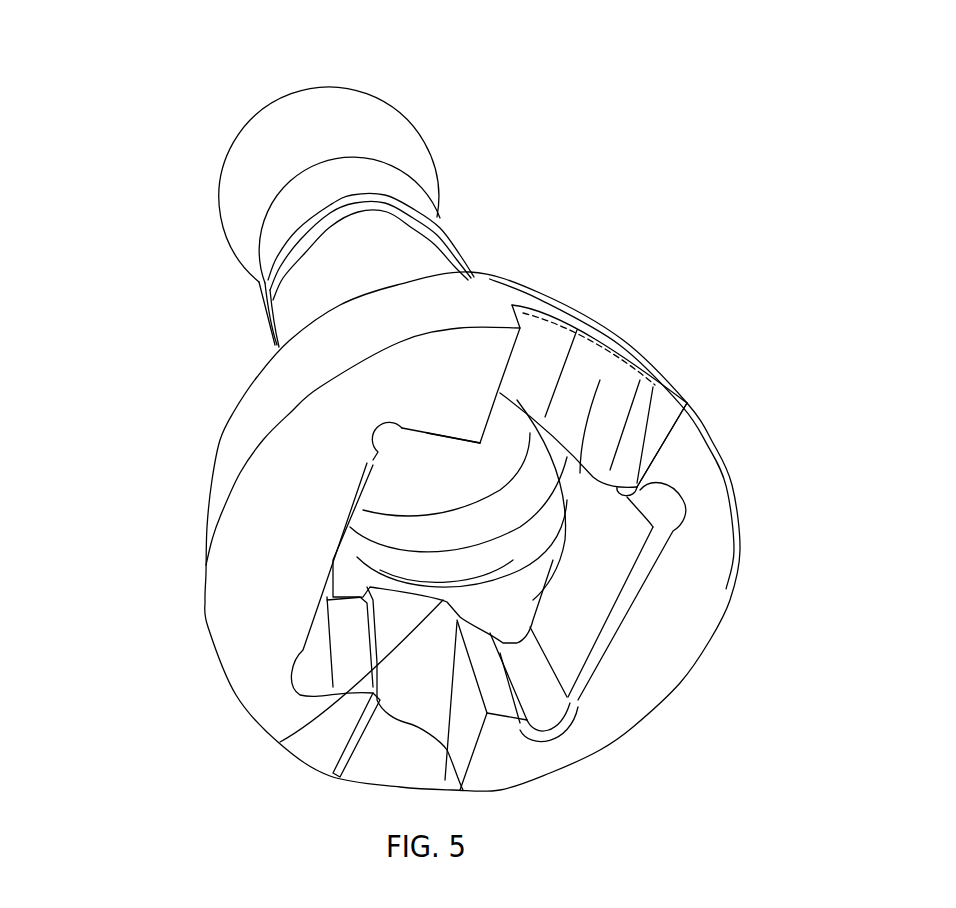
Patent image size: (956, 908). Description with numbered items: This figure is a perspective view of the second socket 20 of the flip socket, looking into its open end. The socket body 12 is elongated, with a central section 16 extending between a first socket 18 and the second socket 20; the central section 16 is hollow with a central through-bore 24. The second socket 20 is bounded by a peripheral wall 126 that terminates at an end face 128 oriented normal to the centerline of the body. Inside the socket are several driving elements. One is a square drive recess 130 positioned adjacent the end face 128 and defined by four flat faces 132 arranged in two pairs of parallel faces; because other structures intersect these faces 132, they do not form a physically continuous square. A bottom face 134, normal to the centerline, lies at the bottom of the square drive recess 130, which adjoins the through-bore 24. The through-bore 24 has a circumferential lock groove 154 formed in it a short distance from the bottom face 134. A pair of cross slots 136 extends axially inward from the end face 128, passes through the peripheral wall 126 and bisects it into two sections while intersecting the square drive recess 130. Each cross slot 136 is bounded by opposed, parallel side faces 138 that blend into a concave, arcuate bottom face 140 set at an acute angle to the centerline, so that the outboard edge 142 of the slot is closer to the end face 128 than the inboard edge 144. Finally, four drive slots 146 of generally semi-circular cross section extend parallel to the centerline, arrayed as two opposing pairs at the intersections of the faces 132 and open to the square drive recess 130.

The socket body 12 is at (138, 274).
The central section 16 is at (417, 240).
The first socket 18 is at (363, 105).
The second socket 20 is at (695, 272).
The central through-bore 24 is at (431, 482).
The peripheral wall 126 is at (712, 447).
The end face 128 is at (714, 553).
The square drive recess 130 is at (578, 658).
The flat faces 132 is at (687, 400).
The bottom face 134 is at (580, 472).
The cross slots 136 is at (545, 322).
The side faces 138 is at (470, 792).
The bottom face 140 is at (407, 703).
The outboard edge 142 is at (424, 733).
The inboard edge 144 is at (330, 770).
The drive slots 146 is at (372, 460).
The circumferential lock groove 154 is at (500, 538).